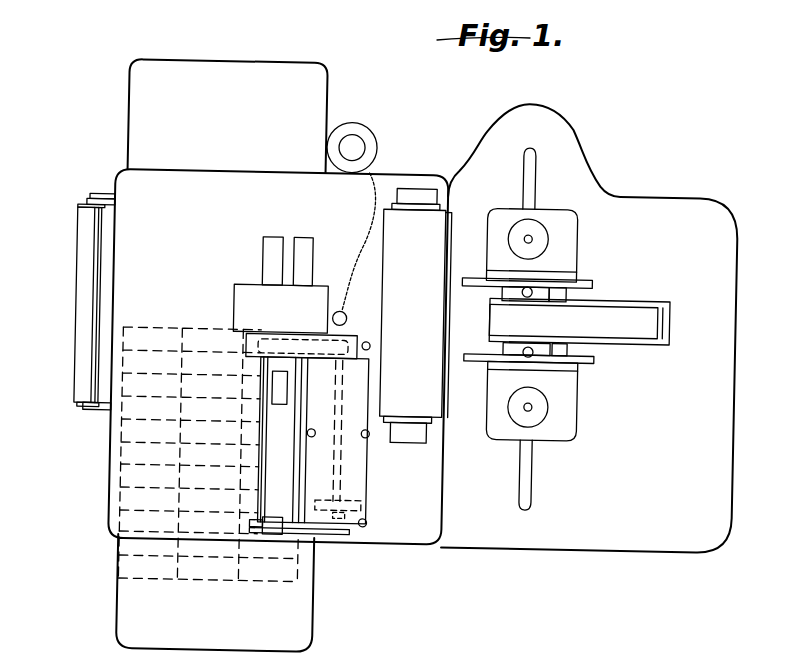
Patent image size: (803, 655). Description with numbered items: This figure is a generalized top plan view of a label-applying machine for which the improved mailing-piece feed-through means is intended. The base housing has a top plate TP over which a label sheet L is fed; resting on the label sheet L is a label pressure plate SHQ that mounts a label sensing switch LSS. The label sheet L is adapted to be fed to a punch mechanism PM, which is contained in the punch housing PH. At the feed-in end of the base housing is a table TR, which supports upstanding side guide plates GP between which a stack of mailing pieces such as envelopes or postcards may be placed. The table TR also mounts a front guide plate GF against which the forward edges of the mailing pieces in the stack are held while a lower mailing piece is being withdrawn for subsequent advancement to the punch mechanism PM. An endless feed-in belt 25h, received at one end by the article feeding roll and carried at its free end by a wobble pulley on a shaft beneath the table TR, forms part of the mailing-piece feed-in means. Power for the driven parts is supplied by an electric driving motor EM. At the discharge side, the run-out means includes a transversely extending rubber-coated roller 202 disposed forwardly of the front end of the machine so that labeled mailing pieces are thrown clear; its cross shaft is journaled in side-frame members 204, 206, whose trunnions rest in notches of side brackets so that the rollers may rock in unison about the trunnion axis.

The top plate TP is at (127, 171).
The side-frame member 204 is at (100, 193).
The rubber-coated roller 202 is at (77, 393).
The side-frame member 206 is at (97, 420).
The label sheet L is at (118, 571).
The punch mechanism PM is at (234, 297).
The punch housing PH is at (284, 295).
The electric driving motor EM is at (347, 316).
The label sensing switch LSS is at (280, 386).
The label pressure plate SHQ is at (281, 457).
The front guide plate GF is at (447, 417).
The side guide plates GP is at (592, 282).
The endless feed-in belt 25h is at (723, 297).
The table TR is at (657, 545).